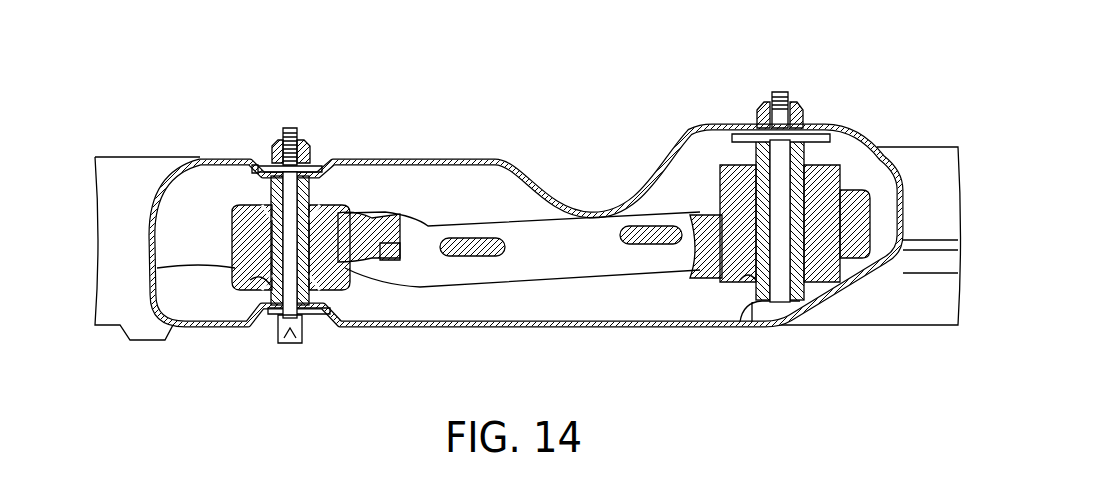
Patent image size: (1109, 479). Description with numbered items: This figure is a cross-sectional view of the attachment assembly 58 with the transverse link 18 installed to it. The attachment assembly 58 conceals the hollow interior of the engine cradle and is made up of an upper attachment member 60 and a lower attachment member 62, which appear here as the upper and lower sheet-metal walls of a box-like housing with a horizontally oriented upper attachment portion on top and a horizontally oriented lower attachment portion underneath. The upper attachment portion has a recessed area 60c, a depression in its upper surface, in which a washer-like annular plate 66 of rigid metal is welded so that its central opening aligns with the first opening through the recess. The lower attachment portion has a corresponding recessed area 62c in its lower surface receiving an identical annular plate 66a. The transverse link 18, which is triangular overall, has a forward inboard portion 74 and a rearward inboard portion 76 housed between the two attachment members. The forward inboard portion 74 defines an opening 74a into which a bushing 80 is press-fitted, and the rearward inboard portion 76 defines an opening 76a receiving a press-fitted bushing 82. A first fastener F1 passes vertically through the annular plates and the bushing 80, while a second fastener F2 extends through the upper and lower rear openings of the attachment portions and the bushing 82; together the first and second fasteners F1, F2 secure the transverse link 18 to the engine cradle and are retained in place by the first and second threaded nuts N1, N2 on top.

The transverse link 18 is at (567, 250).
The attachment assembly 58 is at (484, 152).
The upper attachment member 60 is at (526, 229).
The recessed area 60c is at (322, 163).
The lower attachment member 62 is at (448, 329).
The recessed area 62c is at (336, 328).
The annular plate 66 is at (262, 165).
The annular plate 66a is at (282, 322).
The forward inboard portion 74 is at (236, 238).
The opening 74a is at (268, 280).
The rearward inboard portion 76 is at (856, 200).
The opening 76a is at (752, 276).
The bushing 80 is at (310, 225).
The bushing 82 is at (815, 262).
The first fastener F1 is at (290, 128).
The second fastener F2 is at (770, 92).
The first threaded nut N1 is at (302, 140).
The second threaded nut N2 is at (793, 104).